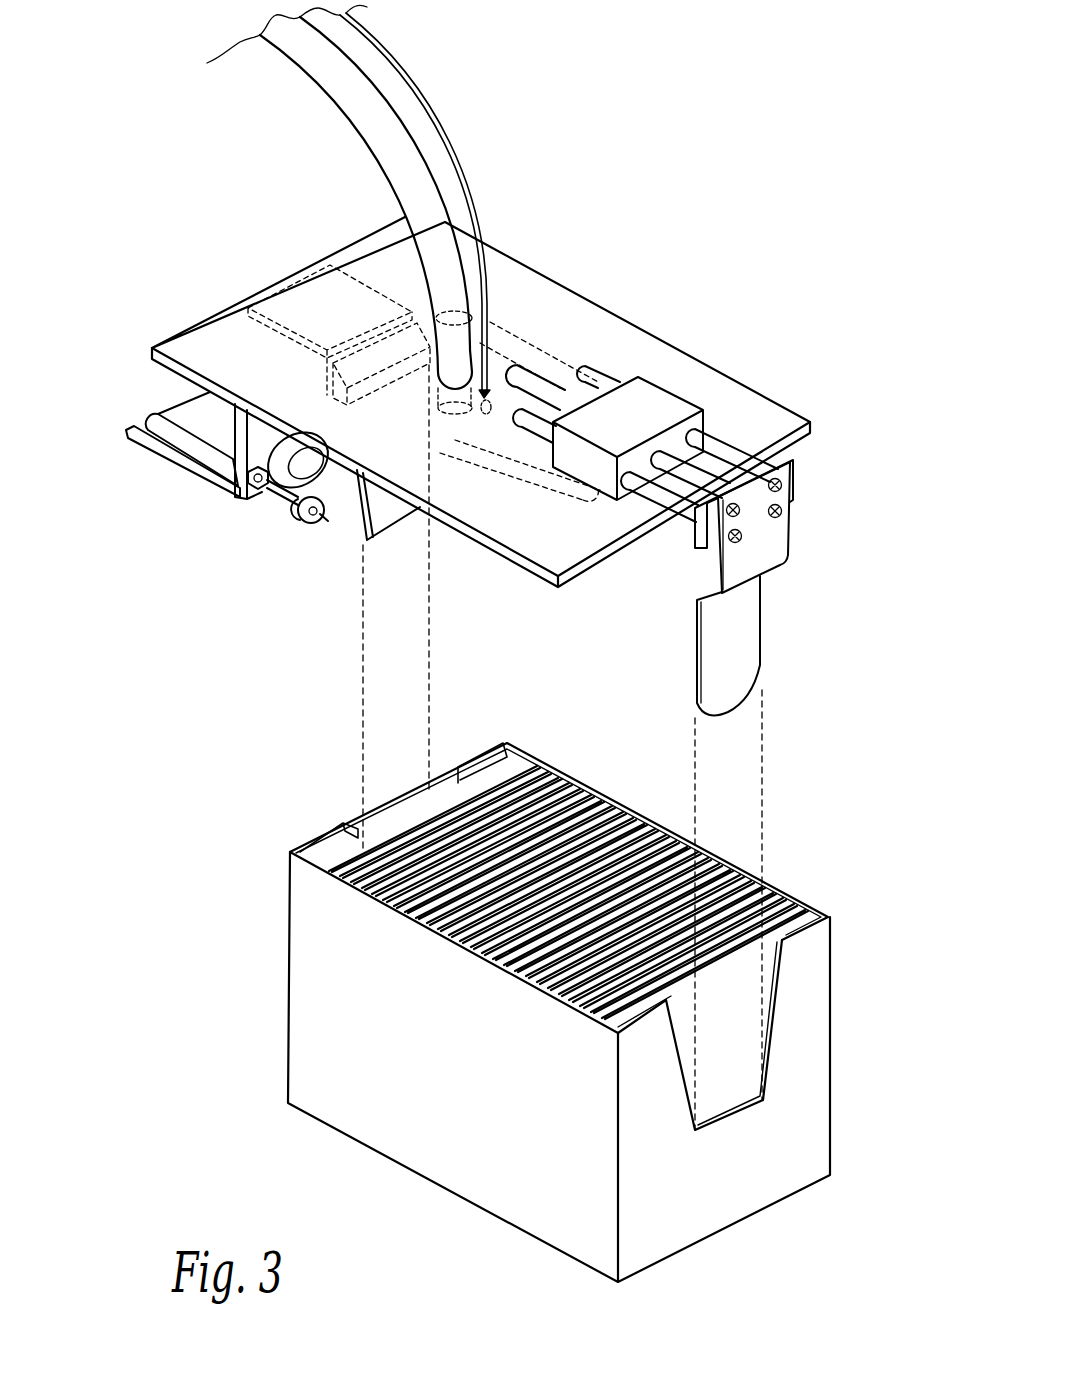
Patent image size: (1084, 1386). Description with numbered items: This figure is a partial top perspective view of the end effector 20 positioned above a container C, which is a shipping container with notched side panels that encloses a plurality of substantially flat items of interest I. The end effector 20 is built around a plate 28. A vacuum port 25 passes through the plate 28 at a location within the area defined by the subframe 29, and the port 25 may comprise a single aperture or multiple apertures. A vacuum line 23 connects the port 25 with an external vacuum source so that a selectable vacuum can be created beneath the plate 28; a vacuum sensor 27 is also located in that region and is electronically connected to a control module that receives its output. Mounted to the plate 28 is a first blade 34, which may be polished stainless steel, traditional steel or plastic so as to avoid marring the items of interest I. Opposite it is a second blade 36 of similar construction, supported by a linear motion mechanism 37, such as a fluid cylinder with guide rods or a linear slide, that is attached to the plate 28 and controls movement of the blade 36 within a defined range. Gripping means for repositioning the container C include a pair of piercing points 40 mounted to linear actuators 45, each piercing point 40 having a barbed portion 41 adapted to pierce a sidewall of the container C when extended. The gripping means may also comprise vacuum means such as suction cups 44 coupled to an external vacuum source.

The end effector 20 is at (205, 265).
The vacuum line 23 is at (385, 142).
The vacuum port 25 is at (452, 390).
The vacuum sensor 27 is at (485, 395).
The plate 28 is at (513, 287).
The subframe 29 is at (577, 500).
The first blade 34 is at (382, 515).
The second blade 36 is at (742, 640).
The linear motion mechanism 37 is at (650, 397).
The piercing points 40 is at (268, 478).
The barbed portion 41 is at (314, 523).
The suction cups 44 is at (285, 460).
The linear actuators 45 is at (183, 442).
The container C is at (355, 1022).
The items of interest I is at (735, 1022).